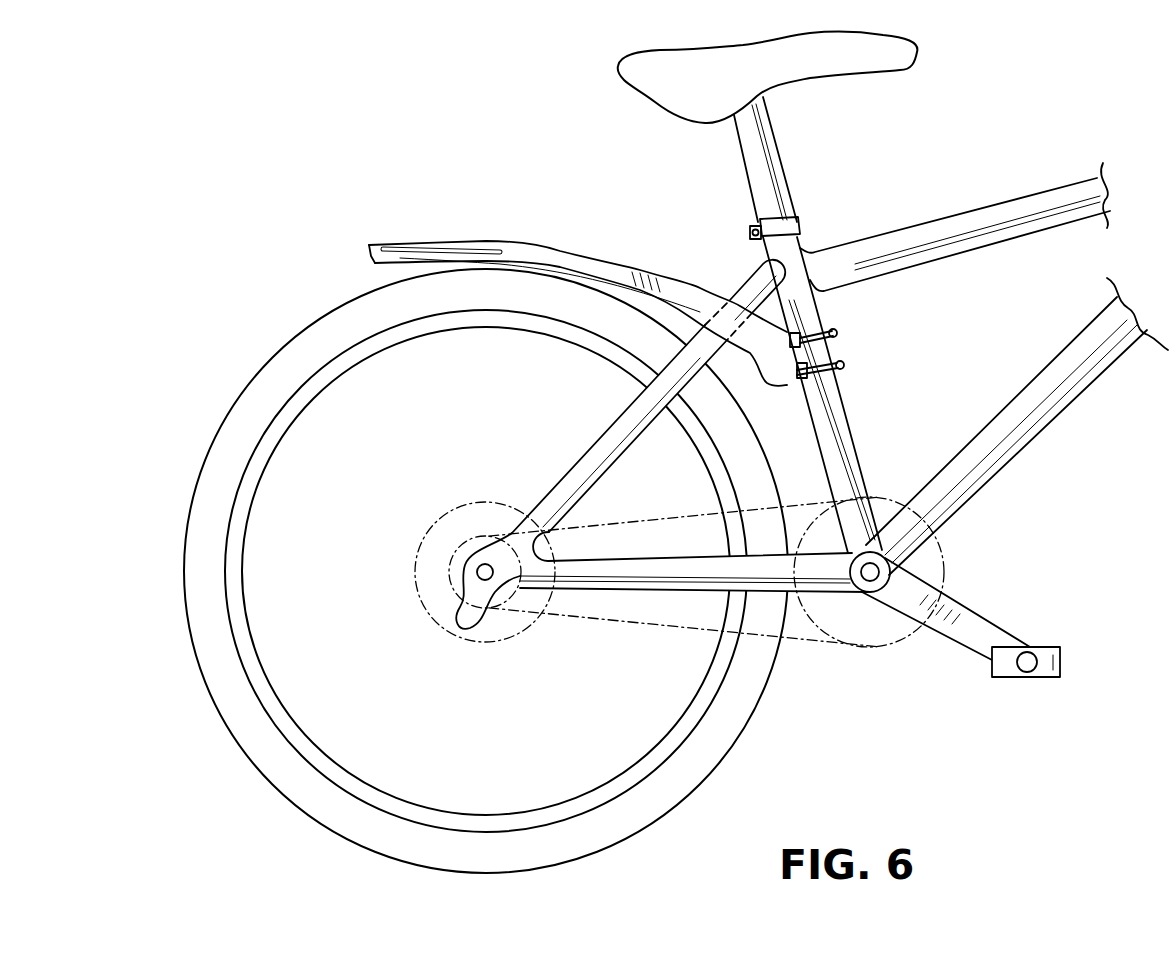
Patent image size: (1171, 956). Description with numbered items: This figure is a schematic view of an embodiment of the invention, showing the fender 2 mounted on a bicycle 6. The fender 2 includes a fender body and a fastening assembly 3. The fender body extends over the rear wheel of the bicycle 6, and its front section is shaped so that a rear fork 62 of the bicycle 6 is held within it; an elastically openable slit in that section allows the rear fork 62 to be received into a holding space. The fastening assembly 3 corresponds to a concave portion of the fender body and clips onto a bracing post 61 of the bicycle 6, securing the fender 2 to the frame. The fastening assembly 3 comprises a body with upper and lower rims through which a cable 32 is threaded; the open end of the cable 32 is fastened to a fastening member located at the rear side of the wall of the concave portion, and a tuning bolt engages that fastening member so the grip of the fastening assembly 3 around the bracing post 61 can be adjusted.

The fender 2 is at (603, 266).
The fastening assembly 3 is at (843, 347).
The cable 32 is at (838, 328).
The bicycle 6 is at (980, 203).
The bracing post 61 is at (842, 418).
The rear fork 62 is at (698, 336).